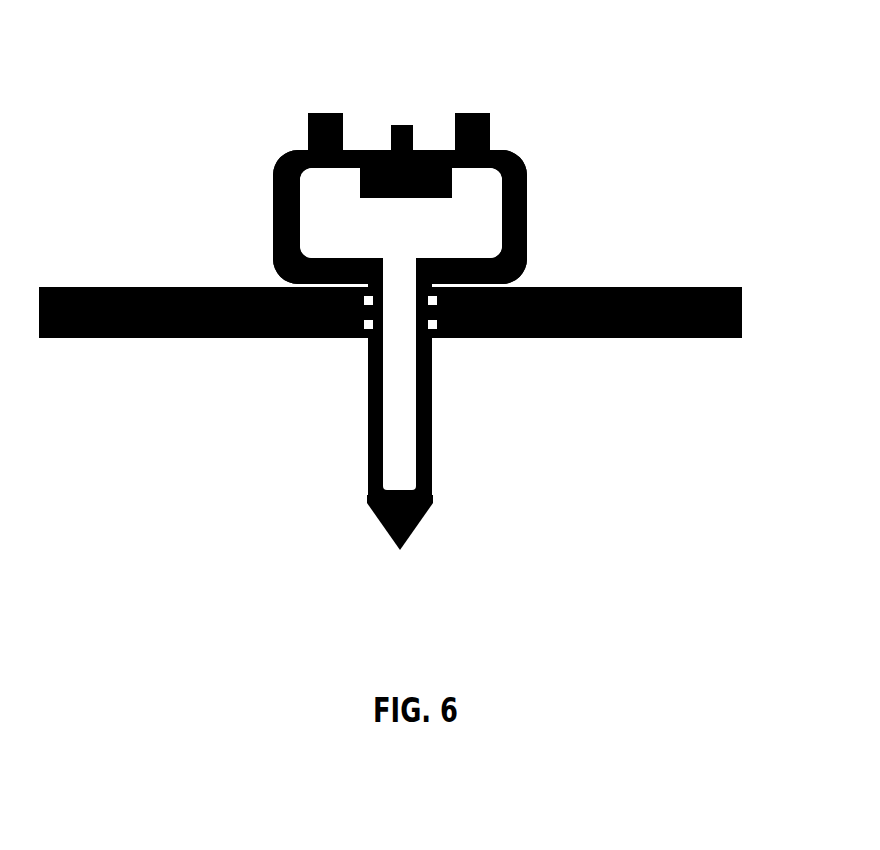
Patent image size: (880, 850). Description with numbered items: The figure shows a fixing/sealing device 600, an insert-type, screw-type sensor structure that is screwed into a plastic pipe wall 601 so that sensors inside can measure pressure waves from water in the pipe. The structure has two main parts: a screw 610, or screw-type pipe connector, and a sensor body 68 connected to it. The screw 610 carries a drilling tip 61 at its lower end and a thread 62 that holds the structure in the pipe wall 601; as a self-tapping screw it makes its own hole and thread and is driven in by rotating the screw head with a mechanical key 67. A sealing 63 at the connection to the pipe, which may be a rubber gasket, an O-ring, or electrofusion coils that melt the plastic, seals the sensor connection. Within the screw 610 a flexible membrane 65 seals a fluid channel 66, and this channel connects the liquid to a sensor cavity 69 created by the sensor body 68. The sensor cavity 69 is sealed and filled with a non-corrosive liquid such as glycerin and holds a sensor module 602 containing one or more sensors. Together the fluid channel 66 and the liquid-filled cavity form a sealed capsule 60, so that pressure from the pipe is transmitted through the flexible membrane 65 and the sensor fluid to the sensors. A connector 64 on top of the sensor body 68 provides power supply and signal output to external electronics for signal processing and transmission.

The fixing/sealing device 600 is at (157, 24).
The sealed capsule 60 is at (527, 237).
The drilling tip 61 is at (413, 528).
The thread 62 is at (365, 345).
The sealing 63 is at (342, 282).
The connector 64 is at (408, 122).
The flexible membrane 65 is at (377, 457).
The fluid channel 66 is at (398, 445).
The mechanical key 67 is at (490, 137).
The sensor body 68 is at (527, 193).
The sensor cavity 69 is at (330, 212).
The pipe wall 601 is at (703, 282).
The sensor module 602 is at (360, 182).
The screw 610 is at (437, 398).